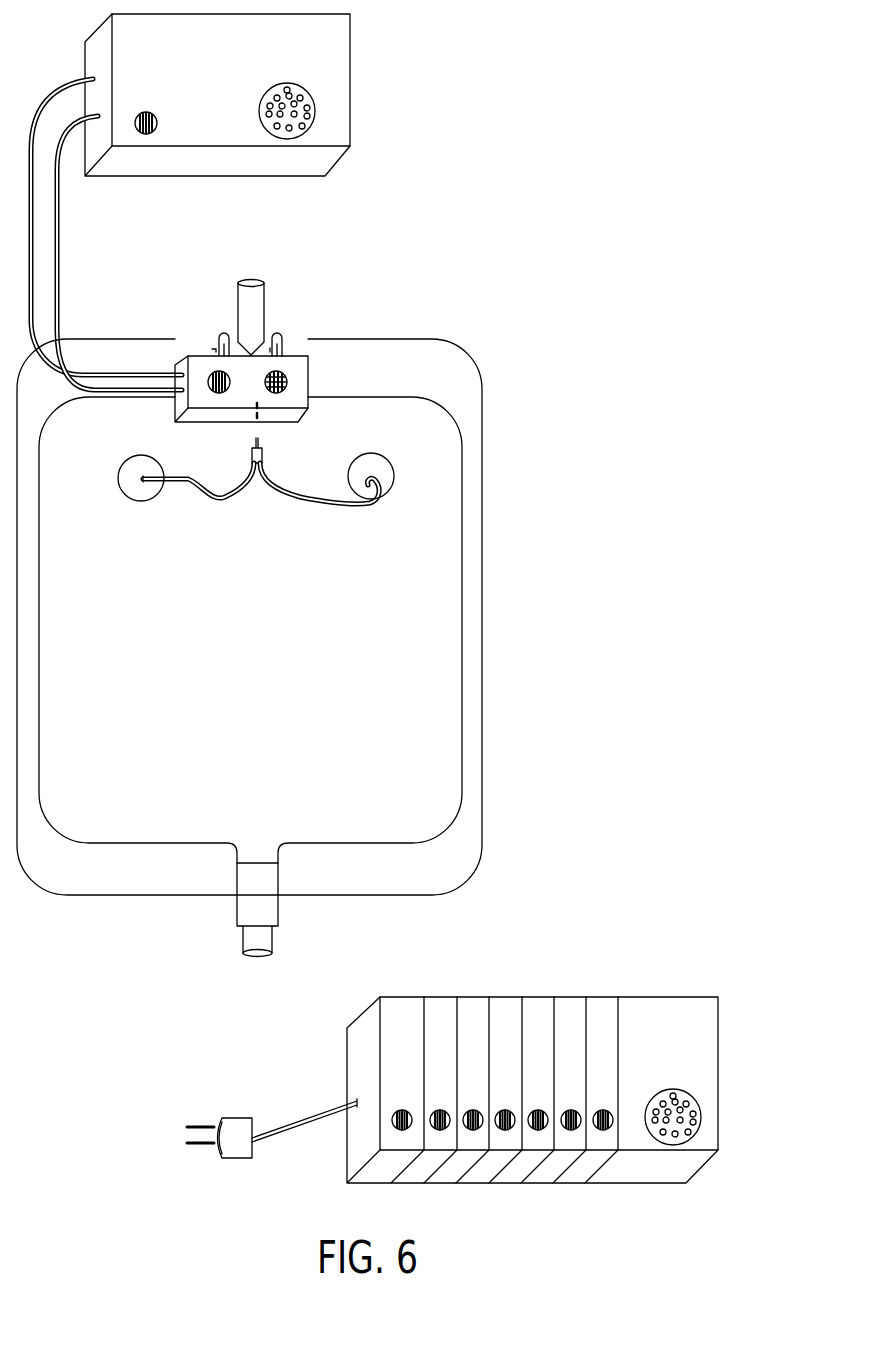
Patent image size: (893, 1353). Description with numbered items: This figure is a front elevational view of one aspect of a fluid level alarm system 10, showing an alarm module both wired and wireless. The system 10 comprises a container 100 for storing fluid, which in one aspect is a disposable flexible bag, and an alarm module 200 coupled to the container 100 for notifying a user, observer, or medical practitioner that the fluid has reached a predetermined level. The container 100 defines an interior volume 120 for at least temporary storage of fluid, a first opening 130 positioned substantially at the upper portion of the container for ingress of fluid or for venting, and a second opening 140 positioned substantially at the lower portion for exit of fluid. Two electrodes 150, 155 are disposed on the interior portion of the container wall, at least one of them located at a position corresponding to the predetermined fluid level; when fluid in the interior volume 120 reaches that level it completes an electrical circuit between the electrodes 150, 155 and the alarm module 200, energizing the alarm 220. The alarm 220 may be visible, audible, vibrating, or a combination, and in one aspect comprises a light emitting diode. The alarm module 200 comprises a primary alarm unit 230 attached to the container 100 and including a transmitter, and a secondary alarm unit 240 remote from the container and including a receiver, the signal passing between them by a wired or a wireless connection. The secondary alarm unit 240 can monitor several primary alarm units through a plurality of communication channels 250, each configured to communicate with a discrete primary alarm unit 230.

The fluid level alarm system 10 is at (607, 337).
The container 100 is at (437, 657).
The interior volume 120 is at (269, 651).
The first opening 130 is at (250, 297).
The second opening 140 is at (258, 960).
The electrode 150 is at (142, 498).
The electrode 155 is at (386, 496).
The alarm module 200 is at (304, 356).
The alarm 220 is at (318, 112).
The primary alarm unit 230 is at (308, 378).
The secondary alarm unit 240 is at (342, 36).
The communication channels 250 is at (405, 1007).